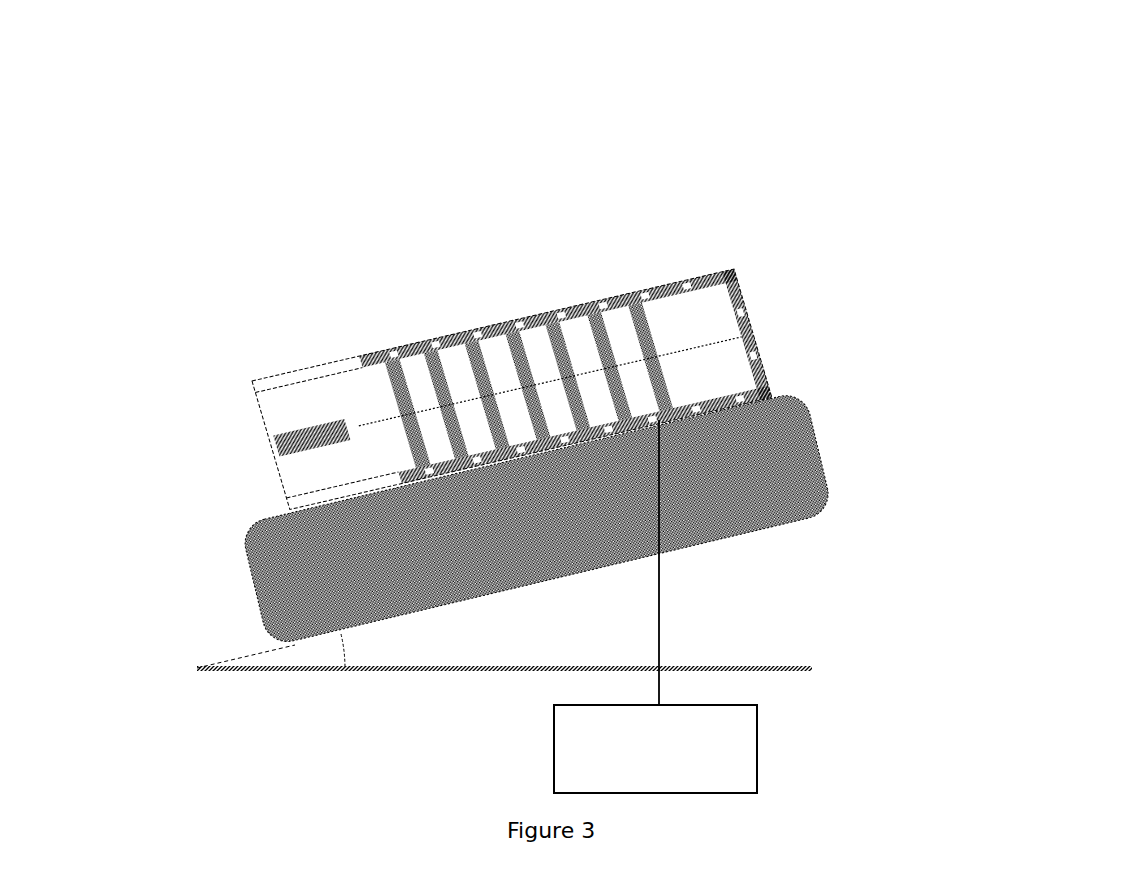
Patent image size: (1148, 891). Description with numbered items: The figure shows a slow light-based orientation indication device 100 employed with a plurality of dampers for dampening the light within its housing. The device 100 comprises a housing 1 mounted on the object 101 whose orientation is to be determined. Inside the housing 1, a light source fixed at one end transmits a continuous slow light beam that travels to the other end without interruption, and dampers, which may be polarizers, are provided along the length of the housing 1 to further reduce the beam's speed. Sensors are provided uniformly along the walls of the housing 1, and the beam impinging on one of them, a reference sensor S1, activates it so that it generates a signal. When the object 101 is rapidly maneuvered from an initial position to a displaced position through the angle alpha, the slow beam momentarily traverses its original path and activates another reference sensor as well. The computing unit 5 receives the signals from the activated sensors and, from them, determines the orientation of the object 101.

The slow light-based orientation indication device 100 is at (670, 173).
The housing 1 is at (447, 389).
The computing unit 5 is at (655, 606).
The object 101 is at (283, 595).
The reference sensor S1 is at (753, 323).
The support surface (foot plate) FP is at (812, 380).